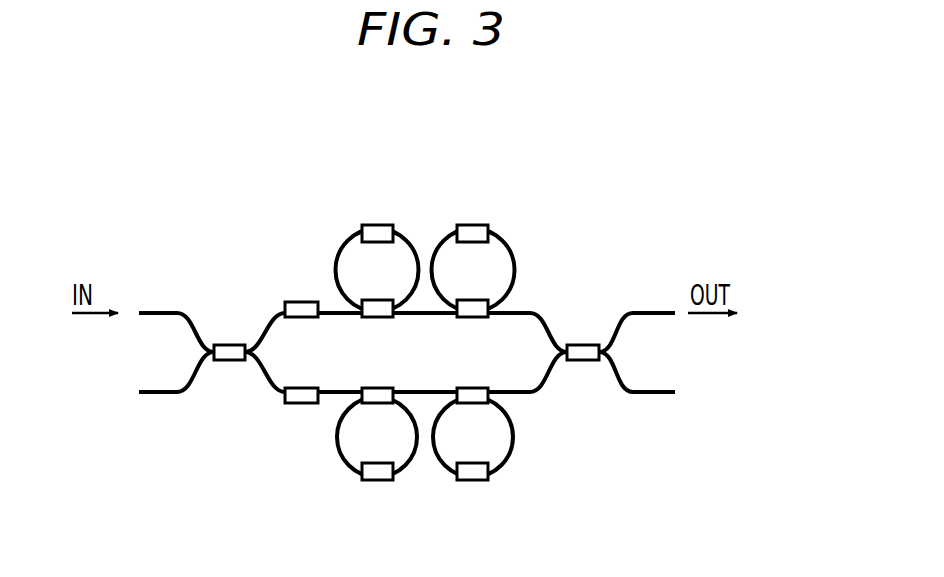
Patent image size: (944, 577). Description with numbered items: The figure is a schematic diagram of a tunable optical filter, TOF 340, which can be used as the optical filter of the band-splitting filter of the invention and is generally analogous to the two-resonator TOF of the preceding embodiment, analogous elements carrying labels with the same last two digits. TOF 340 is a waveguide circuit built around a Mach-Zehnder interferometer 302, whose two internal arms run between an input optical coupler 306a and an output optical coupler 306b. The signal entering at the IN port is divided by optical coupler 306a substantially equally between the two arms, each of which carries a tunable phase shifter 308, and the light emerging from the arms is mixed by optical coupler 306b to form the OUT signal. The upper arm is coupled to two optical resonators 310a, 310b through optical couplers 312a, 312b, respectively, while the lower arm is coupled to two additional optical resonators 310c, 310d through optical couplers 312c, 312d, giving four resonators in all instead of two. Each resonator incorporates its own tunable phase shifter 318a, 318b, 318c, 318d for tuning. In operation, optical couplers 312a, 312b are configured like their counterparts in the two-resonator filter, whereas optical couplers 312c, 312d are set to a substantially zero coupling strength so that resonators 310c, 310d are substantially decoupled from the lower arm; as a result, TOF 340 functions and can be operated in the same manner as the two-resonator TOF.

The Mach-Zehnder interferometer 302 is at (237, 420).
The optical coupler 306a is at (230, 345).
The optical coupler 306b is at (583, 345).
The tunable phase shifter 308 is at (302, 302).
The optical resonator 310a is at (332, 226).
The optical resonator 310b is at (518, 226).
The optical resonator 310c is at (333, 481).
The optical resonator 310d is at (518, 481).
The optical coupler 312a is at (372, 317).
The optical coupler 312b is at (467, 317).
The optical coupler 312c is at (370, 388).
The optical coupler 312d is at (475, 388).
The tunable phase shifter 318a is at (377, 225).
The tunable phase shifter 318b is at (473, 225).
The tunable phase shifter 318c is at (377, 480).
The tunable phase shifter 318d is at (473, 480).
The TOF 340 is at (444, 91).